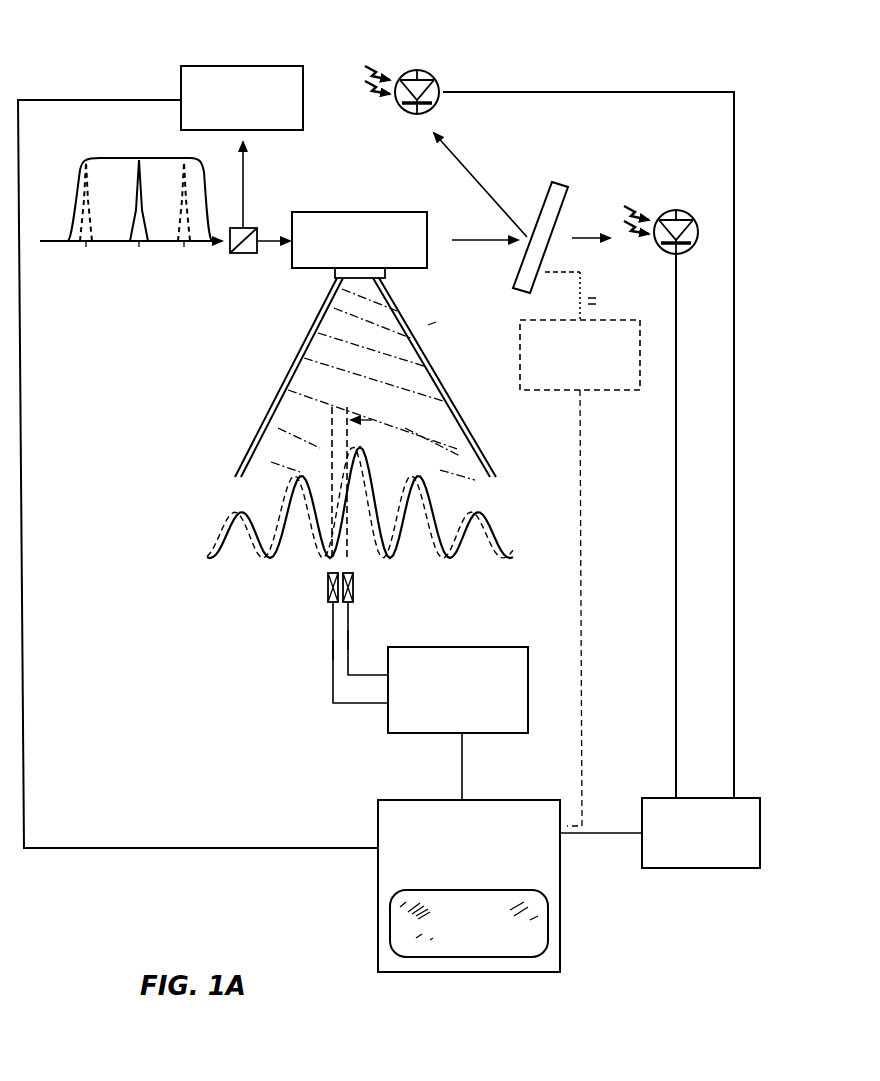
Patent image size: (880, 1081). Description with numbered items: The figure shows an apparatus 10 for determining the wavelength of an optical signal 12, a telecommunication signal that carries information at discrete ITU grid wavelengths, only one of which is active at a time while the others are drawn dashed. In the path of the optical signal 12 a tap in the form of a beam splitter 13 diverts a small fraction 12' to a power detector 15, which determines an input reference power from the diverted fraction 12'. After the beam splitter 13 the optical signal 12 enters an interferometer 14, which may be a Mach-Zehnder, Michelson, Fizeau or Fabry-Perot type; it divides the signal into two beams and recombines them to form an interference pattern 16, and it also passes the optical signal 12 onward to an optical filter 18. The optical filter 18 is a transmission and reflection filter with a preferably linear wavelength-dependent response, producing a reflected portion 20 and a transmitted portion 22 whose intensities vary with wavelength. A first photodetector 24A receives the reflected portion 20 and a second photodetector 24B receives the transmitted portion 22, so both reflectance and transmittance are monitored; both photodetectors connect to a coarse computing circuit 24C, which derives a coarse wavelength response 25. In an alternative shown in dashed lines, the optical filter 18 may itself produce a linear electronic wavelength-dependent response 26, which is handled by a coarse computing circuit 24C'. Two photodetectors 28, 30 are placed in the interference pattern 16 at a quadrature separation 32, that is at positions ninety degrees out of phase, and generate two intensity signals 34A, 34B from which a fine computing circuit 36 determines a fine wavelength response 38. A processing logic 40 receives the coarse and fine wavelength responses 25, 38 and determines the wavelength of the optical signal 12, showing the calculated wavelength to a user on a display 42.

The apparatus 10 is at (122, 58).
The optical signal 12 is at (274, 229).
The diverted fraction 12' is at (269, 185).
The beam splitter 13 is at (241, 255).
The interferometer 14 is at (340, 210).
The power detector 15 is at (212, 65).
The interference pattern 16 is at (503, 525).
The optical filter 18 is at (560, 182).
The reflected portion 20 is at (468, 166).
The transmitted portion 22 is at (586, 240).
The first photodetector 24A is at (438, 78).
The second photodetector 24B is at (670, 210).
The coarse computing circuit 24C is at (688, 802).
The coarse computing circuit 24C' is at (550, 360).
The coarse wavelength response 25 is at (586, 594).
The linear electronic wavelength-dependent response 26 is at (604, 303).
The photodetector 28 is at (328, 585).
The photodetector 30 is at (354, 585).
The quadrature separation 32 is at (328, 420).
The intensity signal 34A is at (333, 636).
The intensity signal 34B is at (350, 635).
The fine computing circuit 36 is at (484, 646).
The fine wavelength response 38 is at (458, 770).
The processing logic 40 is at (378, 828).
The display 42 is at (390, 920).